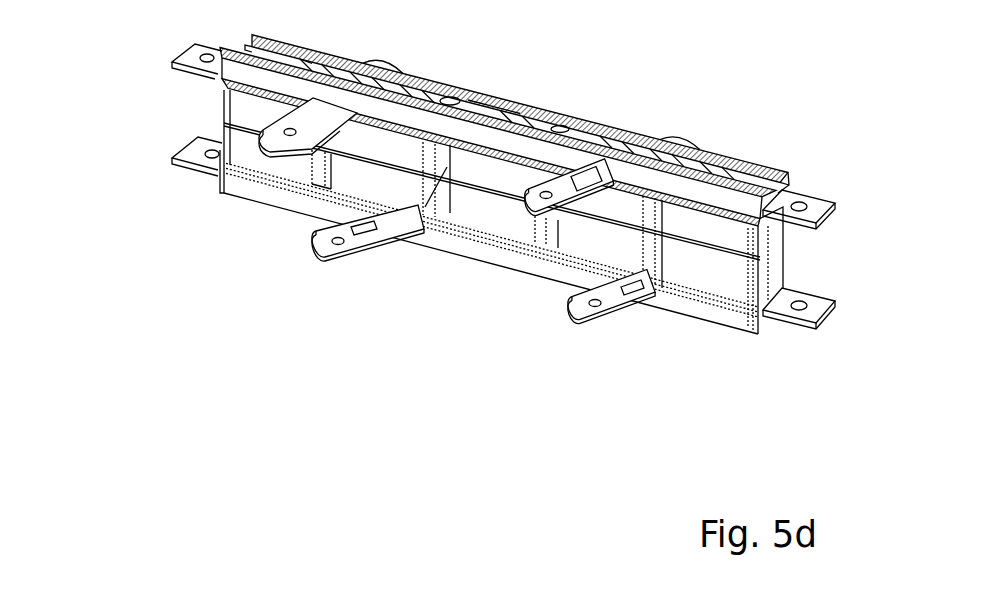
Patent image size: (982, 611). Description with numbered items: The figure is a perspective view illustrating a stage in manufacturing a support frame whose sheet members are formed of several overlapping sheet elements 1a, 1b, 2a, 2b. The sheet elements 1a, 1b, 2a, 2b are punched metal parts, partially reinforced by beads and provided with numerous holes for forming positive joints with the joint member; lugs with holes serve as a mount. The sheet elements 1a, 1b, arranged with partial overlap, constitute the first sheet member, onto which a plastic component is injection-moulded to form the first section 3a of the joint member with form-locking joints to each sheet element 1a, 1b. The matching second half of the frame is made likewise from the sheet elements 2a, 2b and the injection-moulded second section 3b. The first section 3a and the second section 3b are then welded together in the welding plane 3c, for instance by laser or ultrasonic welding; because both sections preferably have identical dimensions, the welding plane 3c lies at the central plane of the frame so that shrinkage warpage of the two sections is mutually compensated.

The sheet element 1a is at (778, 371).
The sheet element 1b is at (192, 165).
The sheet element 2a is at (812, 198).
The sheet element 2b is at (188, 73).
The first section of the joint member 3a is at (490, 238).
The second section of the joint member 3b is at (401, 244).
The welding plane 3c is at (775, 257).